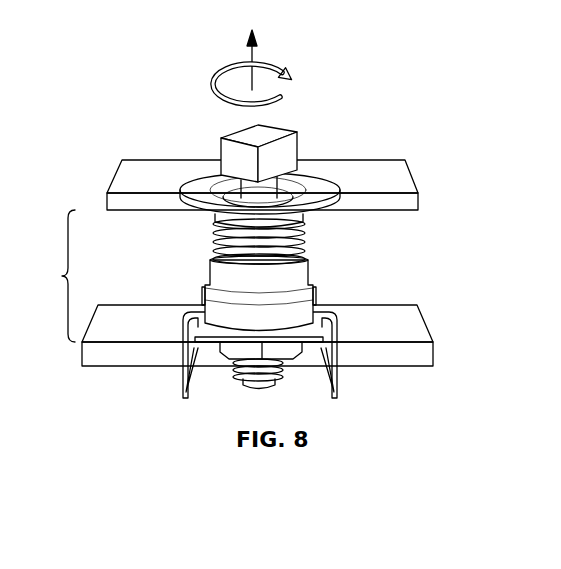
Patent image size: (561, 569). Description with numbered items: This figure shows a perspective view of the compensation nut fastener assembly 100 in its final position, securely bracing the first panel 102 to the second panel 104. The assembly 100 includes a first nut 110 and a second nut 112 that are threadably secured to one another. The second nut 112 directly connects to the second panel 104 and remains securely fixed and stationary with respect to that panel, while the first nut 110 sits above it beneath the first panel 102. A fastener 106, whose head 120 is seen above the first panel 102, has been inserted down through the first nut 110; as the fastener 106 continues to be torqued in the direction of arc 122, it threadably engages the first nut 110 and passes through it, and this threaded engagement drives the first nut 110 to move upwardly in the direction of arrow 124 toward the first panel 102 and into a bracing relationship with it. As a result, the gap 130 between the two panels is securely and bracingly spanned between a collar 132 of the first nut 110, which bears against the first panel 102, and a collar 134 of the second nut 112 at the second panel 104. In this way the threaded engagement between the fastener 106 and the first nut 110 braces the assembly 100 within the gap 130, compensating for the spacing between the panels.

The compensation nut fastener assembly 100 is at (291, 228).
The first panel 102 is at (420, 200).
The second panel 104 is at (436, 352).
The fastener 106 is at (241, 186).
The first nut 110 is at (301, 150).
The second nut 112 is at (318, 297).
The head 120 is at (298, 133).
The arc 122 is at (276, 63).
The arrow 124 is at (247, 50).
The gap 130 is at (48, 276).
The collar 132 is at (323, 213).
The collar 134 is at (344, 333).